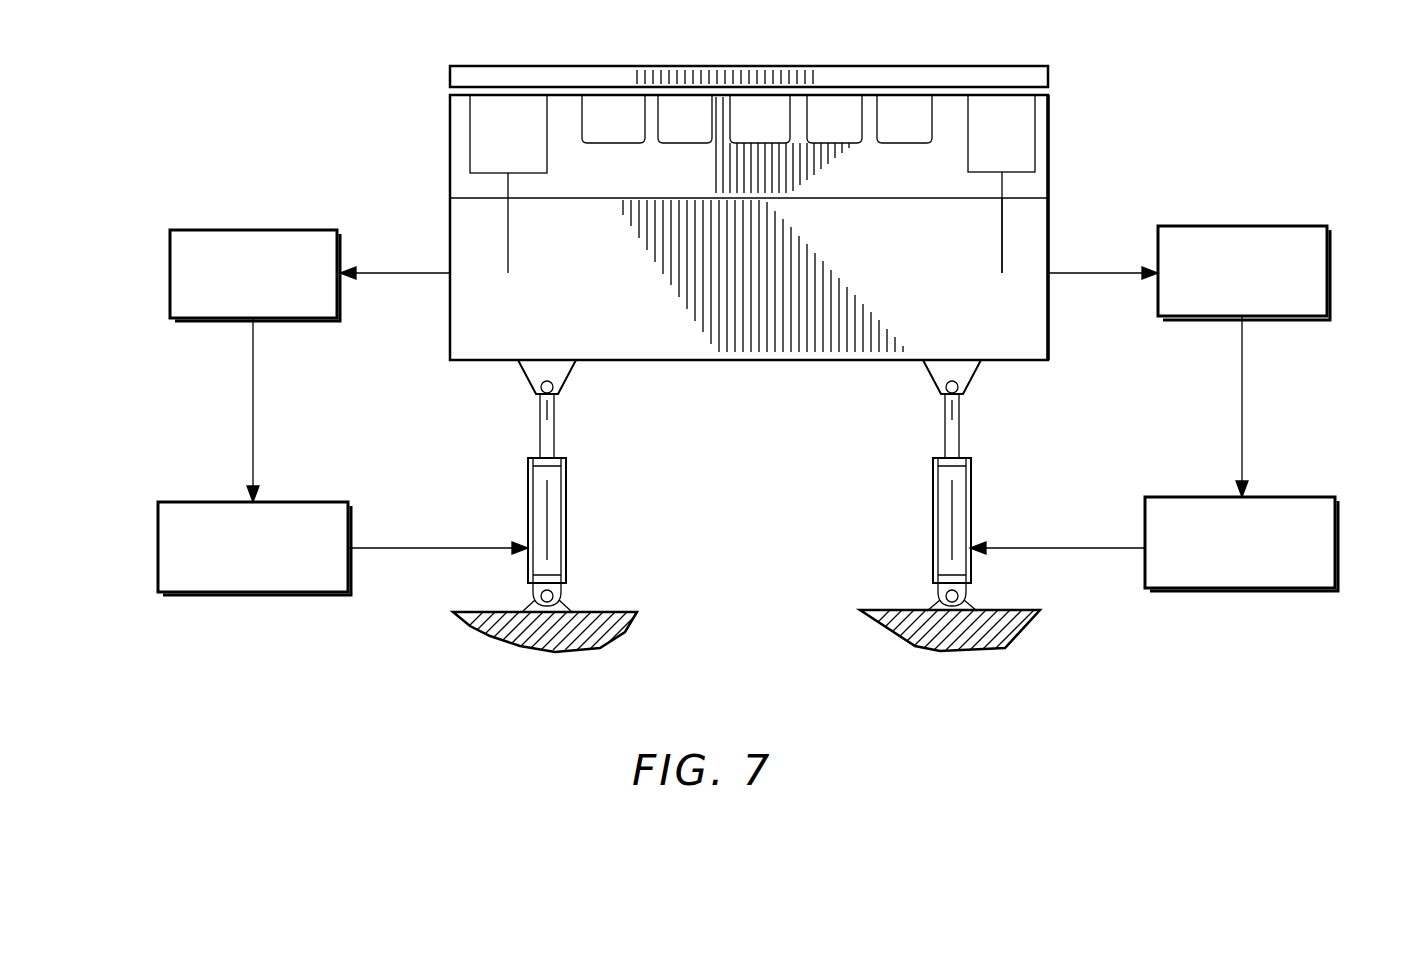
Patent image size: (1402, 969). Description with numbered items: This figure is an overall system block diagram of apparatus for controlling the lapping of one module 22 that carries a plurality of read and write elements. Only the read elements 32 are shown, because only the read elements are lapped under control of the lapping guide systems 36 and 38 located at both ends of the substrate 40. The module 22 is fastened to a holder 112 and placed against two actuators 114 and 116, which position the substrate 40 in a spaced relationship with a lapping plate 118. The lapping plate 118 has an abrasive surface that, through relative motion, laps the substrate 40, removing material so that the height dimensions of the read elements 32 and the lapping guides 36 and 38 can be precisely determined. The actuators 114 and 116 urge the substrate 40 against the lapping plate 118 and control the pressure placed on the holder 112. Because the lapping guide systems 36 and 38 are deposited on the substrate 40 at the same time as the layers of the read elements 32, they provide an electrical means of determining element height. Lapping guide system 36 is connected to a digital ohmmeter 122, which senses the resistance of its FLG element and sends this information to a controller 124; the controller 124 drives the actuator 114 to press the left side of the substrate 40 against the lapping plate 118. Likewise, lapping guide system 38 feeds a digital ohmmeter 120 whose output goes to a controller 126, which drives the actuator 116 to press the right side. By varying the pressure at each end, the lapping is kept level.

The module 22 is at (438, 180).
The read elements 32 is at (676, 130).
The lapping guide system 36 is at (532, 108).
The lapping guide system 38 is at (998, 108).
The substrate 40 is at (1040, 175).
The holder 112 is at (740, 335).
The actuator 114 is at (528, 472).
The actuator 116 is at (933, 472).
The lapping plate 118 is at (1036, 82).
The digital ohmmeter 120 is at (1288, 226).
The digital ohmmeter 122 is at (250, 230).
The controller 124 is at (316, 474).
The controller 126 is at (1337, 498).